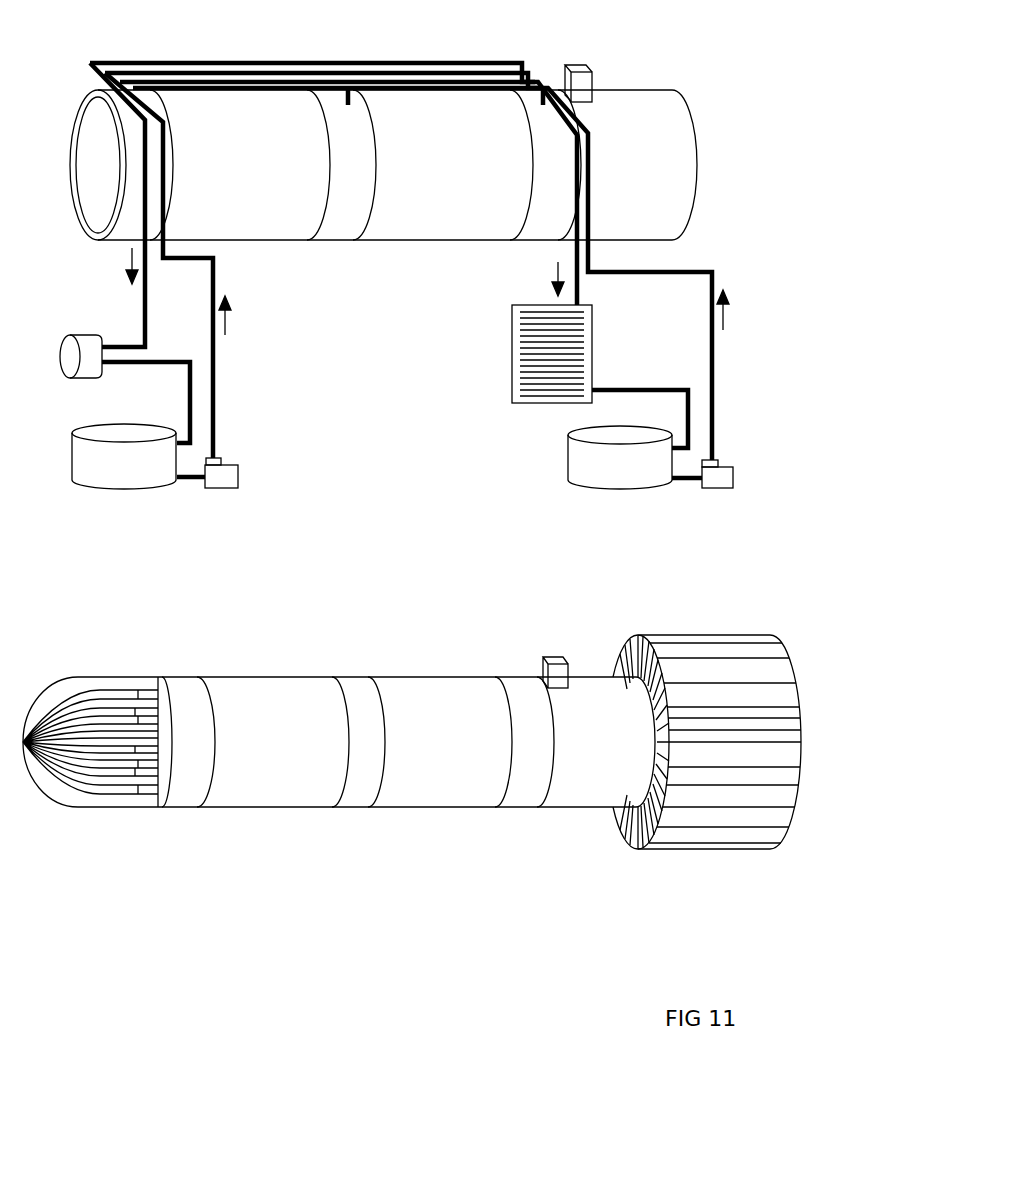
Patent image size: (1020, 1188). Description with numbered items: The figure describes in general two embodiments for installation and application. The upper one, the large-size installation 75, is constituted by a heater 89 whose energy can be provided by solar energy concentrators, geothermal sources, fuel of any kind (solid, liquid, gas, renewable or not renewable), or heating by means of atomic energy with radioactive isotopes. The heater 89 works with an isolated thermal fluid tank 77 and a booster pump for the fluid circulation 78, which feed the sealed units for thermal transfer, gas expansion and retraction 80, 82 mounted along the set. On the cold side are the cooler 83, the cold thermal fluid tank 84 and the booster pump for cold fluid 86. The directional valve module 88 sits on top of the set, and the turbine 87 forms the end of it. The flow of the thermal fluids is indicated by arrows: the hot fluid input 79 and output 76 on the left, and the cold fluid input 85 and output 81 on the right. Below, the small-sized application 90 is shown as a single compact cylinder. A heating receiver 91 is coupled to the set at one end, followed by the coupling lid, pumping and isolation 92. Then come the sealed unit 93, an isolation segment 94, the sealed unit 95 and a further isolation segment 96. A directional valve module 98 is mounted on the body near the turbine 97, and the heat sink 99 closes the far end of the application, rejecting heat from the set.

The large-size installation 75 is at (373, 483).
The hot fluid output indication 76 is at (123, 263).
The isolated thermal fluid tank 77 is at (124, 468).
The booster pump for the fluid circulation 78 is at (240, 470).
The hot fluid input indication 79 is at (227, 323).
The sealed unit for thermal transfer, gas expansion and retraction 80 is at (257, 198).
The cold fluid output indication 81 is at (555, 273).
The sealed unit for thermal transfer, gas expansion and retraction 82 is at (445, 200).
The cooler 83 is at (512, 368).
The cold thermal fluid tank 84 is at (600, 465).
The cold fluid input indication 85 is at (725, 313).
The booster pump for cold fluid 86 is at (717, 488).
The turbine 87 is at (672, 137).
The directional valve module 88 is at (583, 83).
The heater 89 is at (82, 348).
The small-sized application 90 is at (380, 890).
The heating receiver 91 is at (87, 807).
The coupling lid, pumping and isolation 92 is at (185, 768).
The sealed unit 93 is at (263, 765).
The isolation segment 94 is at (347, 780).
The sealed unit 95 is at (447, 770).
The isolation segment 96 is at (528, 773).
The turbine 97 is at (583, 765).
The directional valve module 98 is at (558, 672).
The heat sink 99 is at (708, 818).